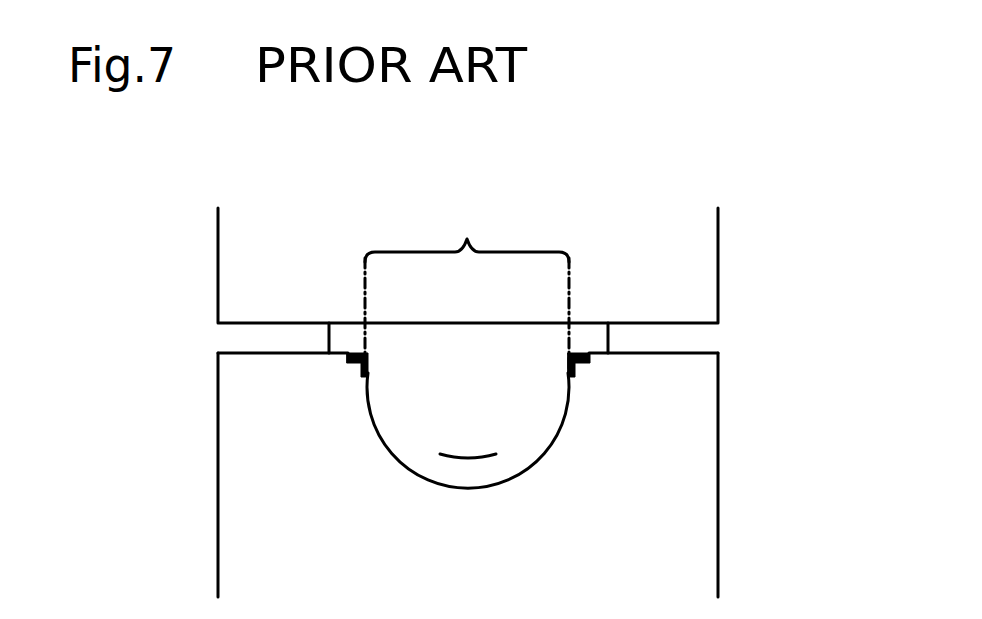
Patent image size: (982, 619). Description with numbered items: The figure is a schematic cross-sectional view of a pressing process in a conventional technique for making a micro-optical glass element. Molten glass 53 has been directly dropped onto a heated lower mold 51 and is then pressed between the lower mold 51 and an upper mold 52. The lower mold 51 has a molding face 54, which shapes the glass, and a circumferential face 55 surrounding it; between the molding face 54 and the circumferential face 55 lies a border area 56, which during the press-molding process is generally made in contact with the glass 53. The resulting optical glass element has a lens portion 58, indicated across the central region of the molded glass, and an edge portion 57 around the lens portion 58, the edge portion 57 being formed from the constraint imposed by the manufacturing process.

The lower mold 51 is at (690, 513).
The upper mold 52 is at (688, 252).
The molten glass 53 is at (448, 427).
The molding face 54 is at (468, 458).
The circumferential face 55 is at (282, 353).
The border area 56 is at (355, 373).
The edge portion 57 is at (343, 338).
The lens portion 58 is at (467, 291).